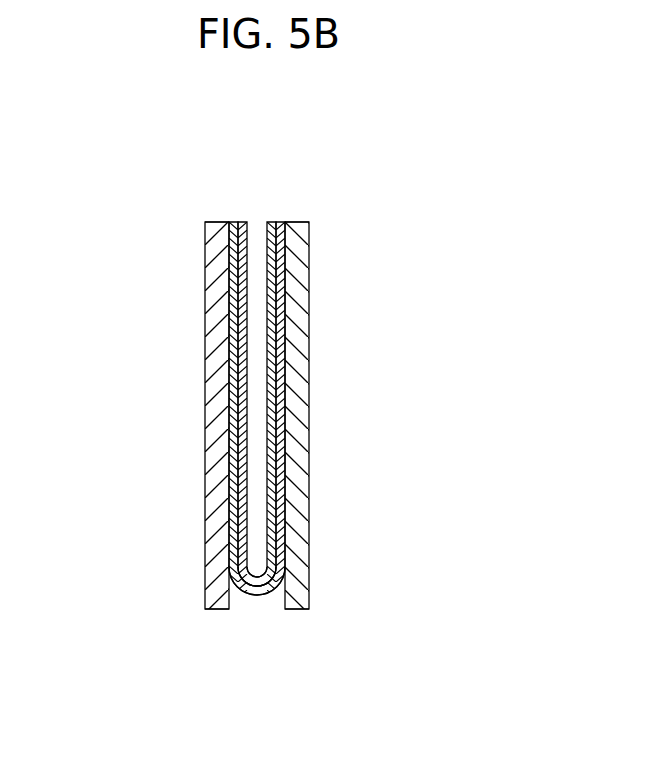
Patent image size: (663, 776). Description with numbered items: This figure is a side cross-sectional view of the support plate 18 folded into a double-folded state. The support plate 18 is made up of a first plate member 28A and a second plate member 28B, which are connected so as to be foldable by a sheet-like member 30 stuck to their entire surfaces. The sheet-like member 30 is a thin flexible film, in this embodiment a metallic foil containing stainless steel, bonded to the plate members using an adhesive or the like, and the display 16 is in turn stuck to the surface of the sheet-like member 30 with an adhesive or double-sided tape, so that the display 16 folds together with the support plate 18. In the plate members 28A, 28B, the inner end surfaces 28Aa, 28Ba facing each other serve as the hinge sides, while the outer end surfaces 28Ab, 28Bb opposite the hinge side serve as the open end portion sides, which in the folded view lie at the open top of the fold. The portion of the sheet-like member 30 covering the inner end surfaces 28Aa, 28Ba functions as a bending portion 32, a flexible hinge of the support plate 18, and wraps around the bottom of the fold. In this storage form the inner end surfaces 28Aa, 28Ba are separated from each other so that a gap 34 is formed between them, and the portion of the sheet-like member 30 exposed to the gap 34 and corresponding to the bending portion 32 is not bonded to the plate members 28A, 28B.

The support plate 18 is at (258, 419).
The first plate member 28A is at (206, 354).
The second plate member 28B is at (302, 352).
The outer end surface of first plate member 28Ab is at (218, 222).
The inner end surface of first plate member 28Aa is at (218, 609).
The outer end surface of second plate member 28Bb is at (299, 222).
The inner end surface of second plate member 28Ba is at (298, 609).
The display 16 is at (275, 403).
The sheet-like member 30 is at (285, 453).
The bending portion 32 is at (262, 596).
The gap 34 is at (285, 625).